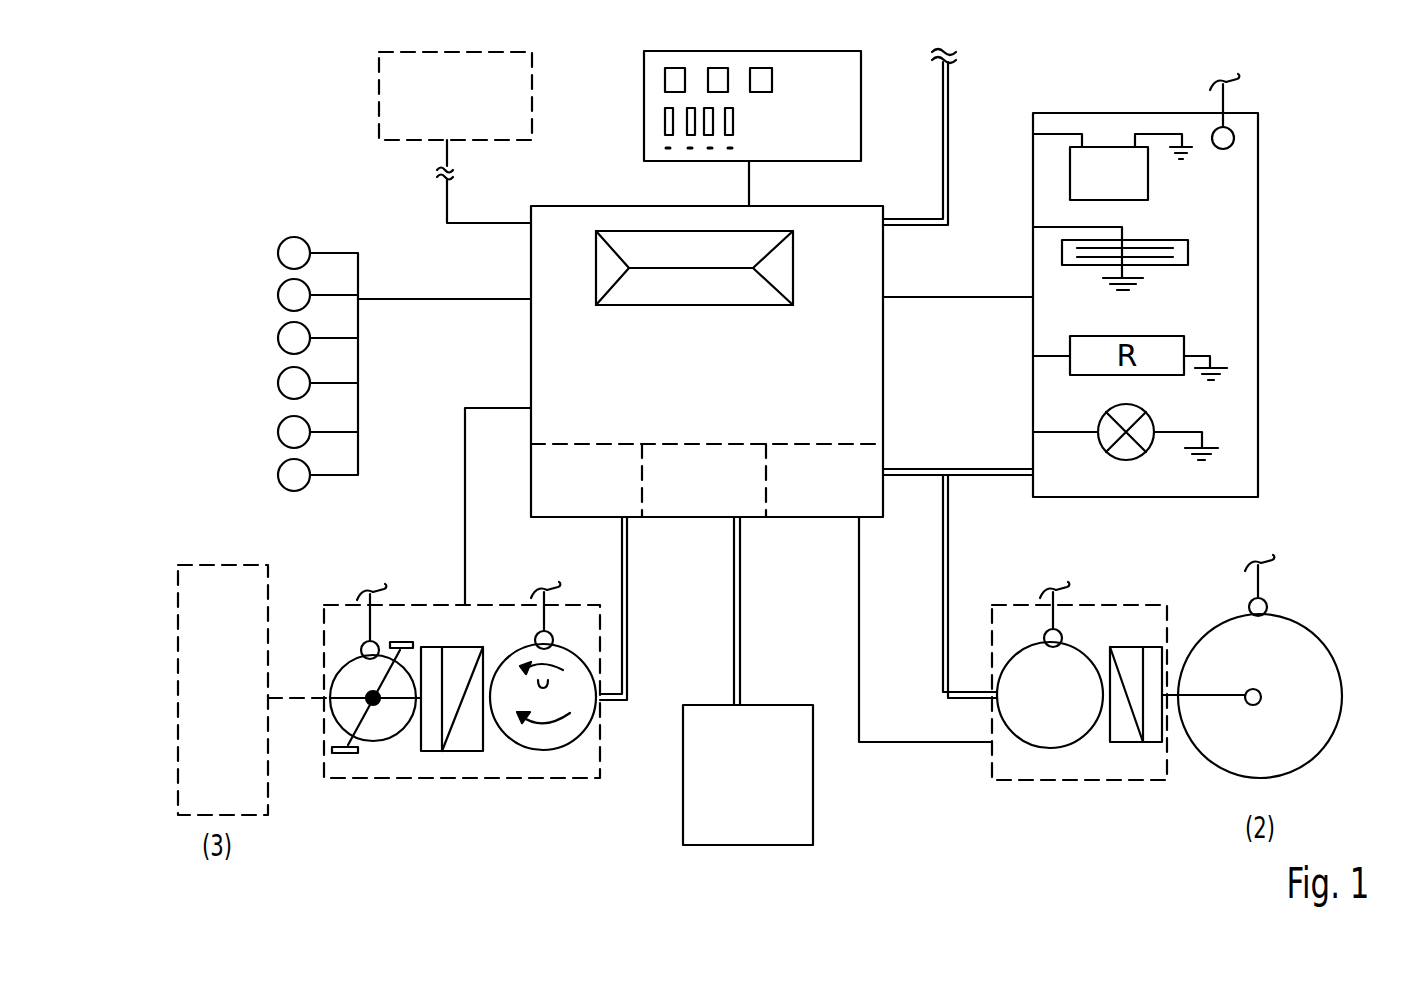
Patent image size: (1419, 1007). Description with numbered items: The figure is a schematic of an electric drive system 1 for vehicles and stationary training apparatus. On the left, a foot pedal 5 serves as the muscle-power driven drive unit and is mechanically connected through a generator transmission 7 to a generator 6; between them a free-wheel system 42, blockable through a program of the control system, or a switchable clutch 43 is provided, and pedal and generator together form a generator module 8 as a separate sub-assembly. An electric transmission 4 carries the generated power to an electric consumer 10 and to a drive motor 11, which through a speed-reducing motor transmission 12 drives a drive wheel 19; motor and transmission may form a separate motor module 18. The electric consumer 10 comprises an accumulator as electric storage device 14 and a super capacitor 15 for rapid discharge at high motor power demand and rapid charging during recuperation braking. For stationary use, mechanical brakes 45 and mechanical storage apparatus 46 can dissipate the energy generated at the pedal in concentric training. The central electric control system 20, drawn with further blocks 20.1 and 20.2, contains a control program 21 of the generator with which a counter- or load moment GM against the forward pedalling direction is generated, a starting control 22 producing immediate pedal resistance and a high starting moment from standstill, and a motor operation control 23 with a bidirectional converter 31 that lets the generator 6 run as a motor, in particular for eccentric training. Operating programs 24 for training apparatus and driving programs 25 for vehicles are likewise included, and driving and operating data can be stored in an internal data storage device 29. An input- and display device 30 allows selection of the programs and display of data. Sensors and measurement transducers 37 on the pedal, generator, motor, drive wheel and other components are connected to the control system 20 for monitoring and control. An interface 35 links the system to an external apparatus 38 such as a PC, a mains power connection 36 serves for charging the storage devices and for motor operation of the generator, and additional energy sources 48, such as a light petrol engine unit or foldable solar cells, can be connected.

The electric drive system 1 is at (262, 134).
The electric transmission 4 is at (985, 468).
The foot pedal 5 is at (375, 727).
The generator 6 is at (565, 747).
The generator transmission 7 is at (465, 740).
The generator module 8 is at (428, 604).
The electric consumer 10 is at (1258, 120).
The drive motor 11 is at (1028, 733).
The motor transmission 12 is at (1123, 728).
The electric storage device 14 is at (1148, 182).
The super capacitor 15 is at (1188, 260).
The motor module 18 is at (1112, 604).
The drive wheel 19 is at (1330, 648).
The electric control system 20 is at (531, 339).
The first control module 20.1 is at (590, 482).
The second control module 20.2 is at (817, 482).
The control program 21 is at (637, 337).
The starting control 22 is at (685, 337).
The motor operation control 23 is at (733, 337).
The operating programs 24 is at (637, 380).
The driving programs 25 is at (684, 380).
The internal data storage device 29 is at (698, 482).
The input- and display device 30 is at (644, 128).
The bidirectional converter 31 is at (782, 268).
The interface 35 is at (447, 207).
The mains power connection 36 is at (948, 147).
The sensors and measurement transducers 37 is at (278, 253).
The external apparatus 38 is at (455, 96).
The free-wheel system 42 is at (432, 742).
The switchable clutch 43 is at (1165, 798).
The mechanical brakes 45 is at (254, 690).
The mechanical storage apparatus 46 is at (222, 670).
The additional energy sources 48 is at (748, 681).
The counter- or load moment GM is at (542, 727).